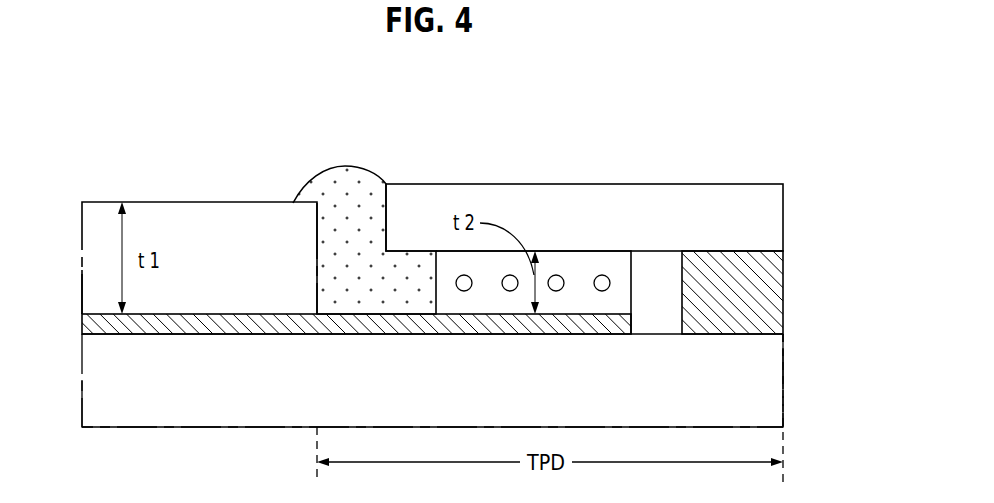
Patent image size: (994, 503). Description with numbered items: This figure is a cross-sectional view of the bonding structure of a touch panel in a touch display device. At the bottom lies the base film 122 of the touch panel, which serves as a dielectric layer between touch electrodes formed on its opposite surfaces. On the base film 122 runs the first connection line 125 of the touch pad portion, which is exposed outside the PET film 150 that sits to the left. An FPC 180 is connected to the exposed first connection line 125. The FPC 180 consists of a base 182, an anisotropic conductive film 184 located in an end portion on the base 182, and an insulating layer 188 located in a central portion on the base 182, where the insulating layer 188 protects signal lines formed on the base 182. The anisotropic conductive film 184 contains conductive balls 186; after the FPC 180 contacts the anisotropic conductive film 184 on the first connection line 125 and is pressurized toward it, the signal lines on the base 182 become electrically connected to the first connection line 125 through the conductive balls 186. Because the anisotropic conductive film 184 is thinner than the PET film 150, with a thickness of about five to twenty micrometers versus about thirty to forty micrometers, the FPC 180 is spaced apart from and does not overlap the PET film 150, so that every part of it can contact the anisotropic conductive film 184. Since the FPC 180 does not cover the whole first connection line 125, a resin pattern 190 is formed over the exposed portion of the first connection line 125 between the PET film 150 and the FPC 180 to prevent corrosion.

The base film 122 is at (139, 412).
The first connection line 125 is at (340, 320).
The PET film 150 is at (200, 221).
The resin pattern 190 is at (338, 180).
The FPC 180 is at (746, 103).
The base 182 is at (502, 184).
The anisotropic conductive film 184 is at (579, 184).
The conductive ball 186 is at (611, 268).
The insulating layer 188 is at (743, 267).